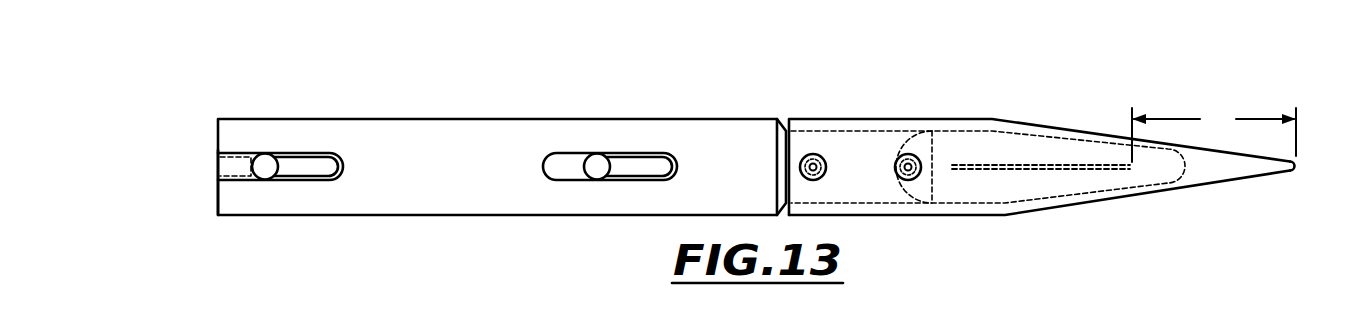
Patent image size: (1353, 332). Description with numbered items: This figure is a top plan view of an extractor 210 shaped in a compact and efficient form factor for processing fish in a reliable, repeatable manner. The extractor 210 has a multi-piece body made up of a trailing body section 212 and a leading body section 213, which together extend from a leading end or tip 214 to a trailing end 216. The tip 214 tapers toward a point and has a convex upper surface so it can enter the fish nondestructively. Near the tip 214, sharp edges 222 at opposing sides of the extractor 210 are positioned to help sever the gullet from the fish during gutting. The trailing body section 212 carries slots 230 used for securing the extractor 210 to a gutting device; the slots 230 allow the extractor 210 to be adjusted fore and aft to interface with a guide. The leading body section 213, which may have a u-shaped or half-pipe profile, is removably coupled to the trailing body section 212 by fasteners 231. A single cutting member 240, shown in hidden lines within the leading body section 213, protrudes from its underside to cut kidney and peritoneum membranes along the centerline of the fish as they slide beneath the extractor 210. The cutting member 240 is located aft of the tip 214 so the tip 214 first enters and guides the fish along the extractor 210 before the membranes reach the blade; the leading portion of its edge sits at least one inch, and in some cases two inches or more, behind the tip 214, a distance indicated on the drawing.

The extractor 210 is at (1244, 68).
The trailing body section 212 is at (447, 118).
The leading body section 213 is at (992, 140).
The tip 214 is at (1293, 171).
The trailing end 216 is at (242, 215).
The sharp edges 222 is at (1005, 213).
The slots 230 is at (298, 155).
The fasteners 231 is at (818, 154).
The cutting member 240 is at (1102, 166).